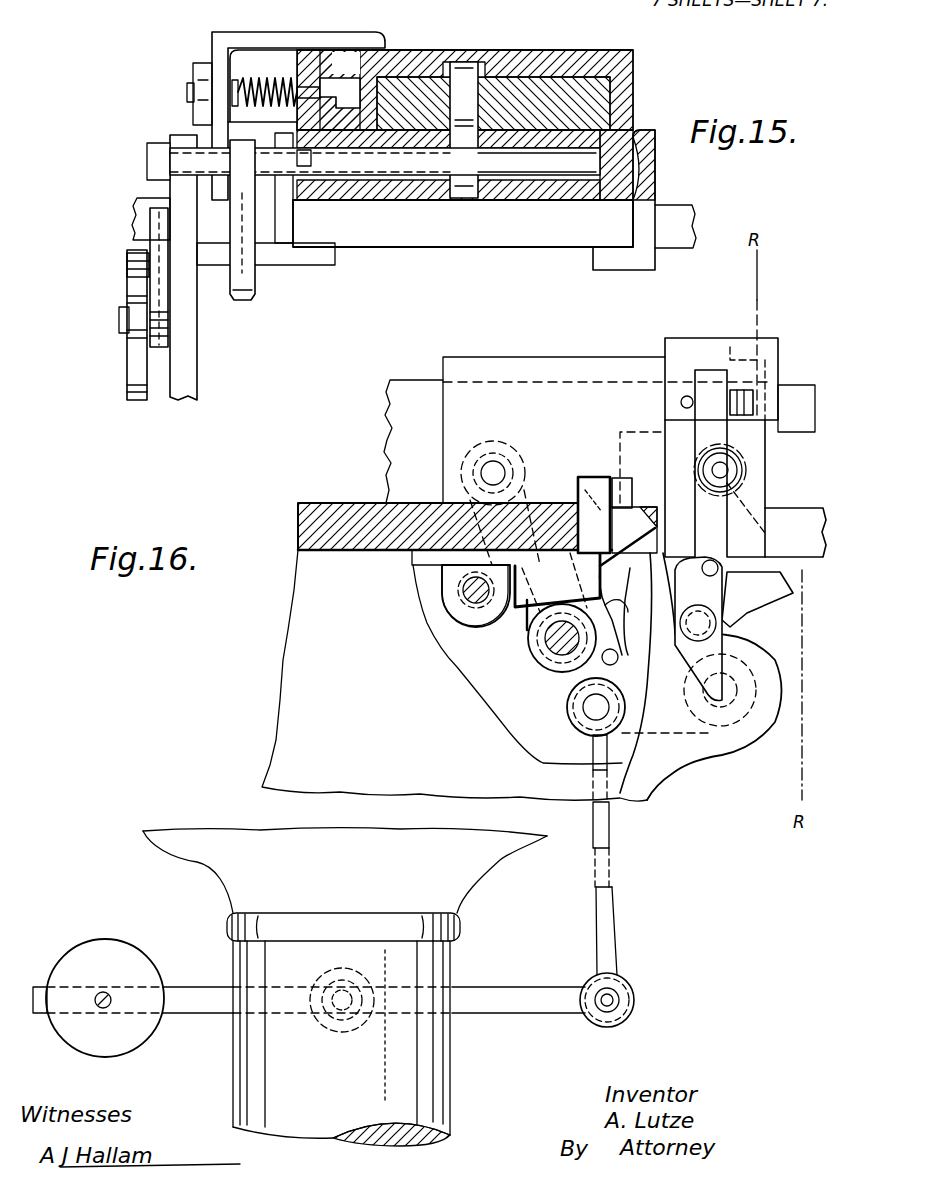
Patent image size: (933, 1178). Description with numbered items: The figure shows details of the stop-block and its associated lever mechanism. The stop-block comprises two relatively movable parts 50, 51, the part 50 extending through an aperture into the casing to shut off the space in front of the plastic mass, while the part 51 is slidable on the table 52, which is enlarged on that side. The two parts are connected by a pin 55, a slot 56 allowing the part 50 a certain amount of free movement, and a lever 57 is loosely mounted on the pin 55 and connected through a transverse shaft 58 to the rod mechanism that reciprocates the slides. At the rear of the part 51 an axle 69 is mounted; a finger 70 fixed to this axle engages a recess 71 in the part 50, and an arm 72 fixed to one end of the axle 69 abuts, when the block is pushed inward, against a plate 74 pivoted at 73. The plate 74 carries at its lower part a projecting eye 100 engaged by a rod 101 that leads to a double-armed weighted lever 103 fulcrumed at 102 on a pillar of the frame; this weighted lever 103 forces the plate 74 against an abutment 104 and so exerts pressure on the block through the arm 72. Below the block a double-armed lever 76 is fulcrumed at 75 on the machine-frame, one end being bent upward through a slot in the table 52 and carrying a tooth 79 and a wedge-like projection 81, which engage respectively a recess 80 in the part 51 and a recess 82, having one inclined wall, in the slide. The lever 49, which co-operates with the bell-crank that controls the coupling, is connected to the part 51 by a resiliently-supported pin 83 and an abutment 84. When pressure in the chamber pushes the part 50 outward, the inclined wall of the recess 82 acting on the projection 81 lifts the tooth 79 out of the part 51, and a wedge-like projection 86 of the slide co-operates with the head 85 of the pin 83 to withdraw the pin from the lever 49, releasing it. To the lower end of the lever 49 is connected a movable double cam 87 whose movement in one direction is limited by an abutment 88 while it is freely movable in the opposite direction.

In FIG. 15, the lever 49 is at (430, 215).
In FIG. 16, the lever 49 is at (715, 375).
In FIG. 15, the part of the stop-block 50 is at (400, 70).
In FIG. 16, the part of the stop-block 50 is at (400, 388).
In FIG. 15, the part of the stop-block 51 is at (297, 62).
In FIG. 16, the part of the stop-block 51 is at (796, 488).
In FIG. 15, the table 52 is at (415, 232).
In FIG. 16, the table 52 is at (378, 548).
In FIG. 16, the pin 55 is at (493, 462).
In FIG. 16, the slot 56 is at (528, 462).
In FIG. 16, the lever 57 is at (478, 462).
In FIG. 16, the transverse shaft 58 is at (548, 642).
In FIG. 15, the axle 69 is at (147, 160).
In FIG. 16, the axle 69 is at (730, 470).
In FIG. 15, the finger 70 is at (462, 88).
In FIG. 15, the recess 71 is at (478, 95).
In FIG. 15, the arm 72 is at (250, 268).
In FIG. 16, the arm 72 is at (786, 576).
In FIG. 16, the pivot 73 is at (730, 700).
In FIG. 16, the plate 74 is at (655, 760).
In FIG. 16, the fulcrum 75 is at (460, 598).
In FIG. 16, the double-armed lever 76 is at (541, 601).
In FIG. 16, the tooth 79 is at (598, 480).
In FIG. 16, the recess 80 is at (596, 490).
In FIG. 16, the wedge-like projection 81 is at (594, 515).
In FIG. 16, the recess 82 is at (628, 536).
In FIG. 15, the resiliently-supported pin 83 is at (172, 107).
In FIG. 16, the resiliently-supported pin 83 is at (733, 398).
In FIG. 15, the abutment 84 is at (188, 88).
In FIG. 16, the abutment 84 is at (682, 404).
In FIG. 15, the head 85 is at (330, 84).
In FIG. 15, the wedge-like projection 86 is at (309, 160).
In FIG. 15, the movable double cam 87 is at (135, 365).
In FIG. 16, the movable double cam 87 is at (808, 662).
In FIG. 15, the abutment 88 is at (127, 268).
In FIG. 16, the abutment 88 is at (720, 570).
In FIG. 16, the projecting eye 100 is at (566, 707).
In FIG. 16, the rod 101 is at (610, 895).
In FIG. 16, the fulcrum 102 is at (342, 1000).
In FIG. 16, the double-armed weighted lever 103 is at (497, 1005).
In FIG. 16, the abutment 104 is at (626, 659).